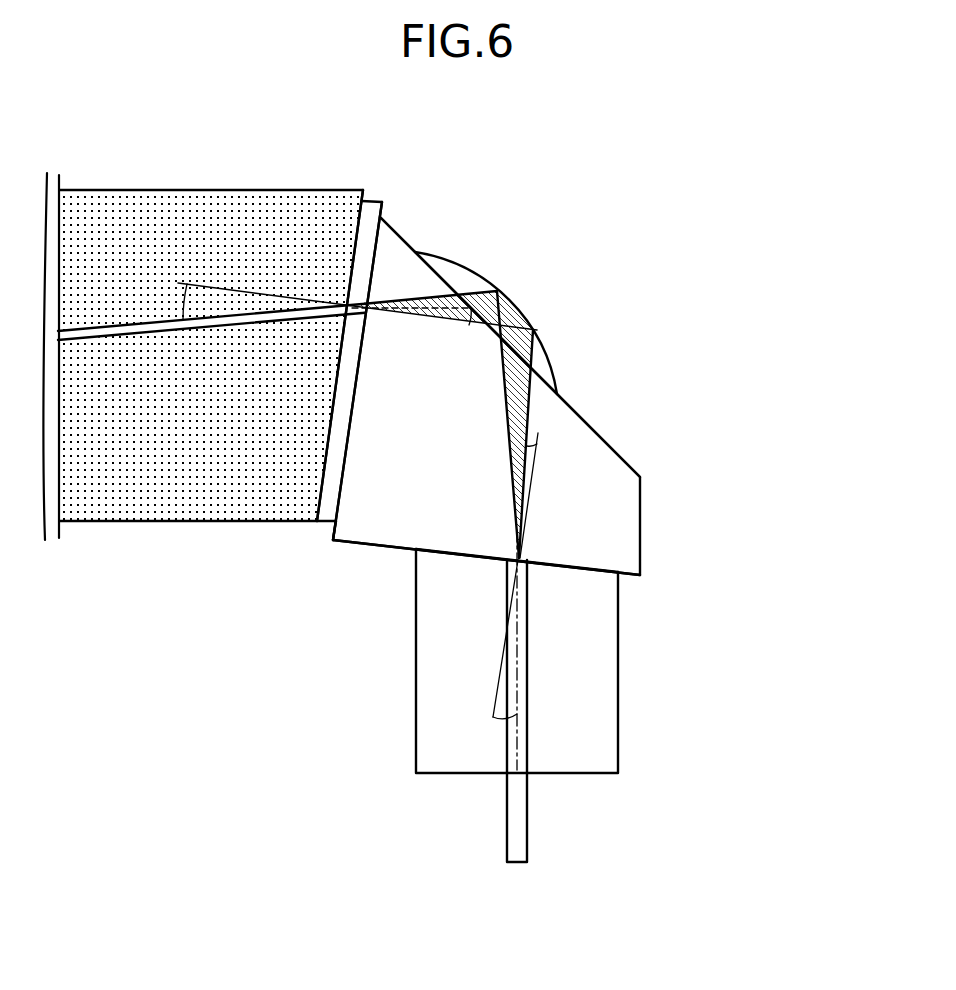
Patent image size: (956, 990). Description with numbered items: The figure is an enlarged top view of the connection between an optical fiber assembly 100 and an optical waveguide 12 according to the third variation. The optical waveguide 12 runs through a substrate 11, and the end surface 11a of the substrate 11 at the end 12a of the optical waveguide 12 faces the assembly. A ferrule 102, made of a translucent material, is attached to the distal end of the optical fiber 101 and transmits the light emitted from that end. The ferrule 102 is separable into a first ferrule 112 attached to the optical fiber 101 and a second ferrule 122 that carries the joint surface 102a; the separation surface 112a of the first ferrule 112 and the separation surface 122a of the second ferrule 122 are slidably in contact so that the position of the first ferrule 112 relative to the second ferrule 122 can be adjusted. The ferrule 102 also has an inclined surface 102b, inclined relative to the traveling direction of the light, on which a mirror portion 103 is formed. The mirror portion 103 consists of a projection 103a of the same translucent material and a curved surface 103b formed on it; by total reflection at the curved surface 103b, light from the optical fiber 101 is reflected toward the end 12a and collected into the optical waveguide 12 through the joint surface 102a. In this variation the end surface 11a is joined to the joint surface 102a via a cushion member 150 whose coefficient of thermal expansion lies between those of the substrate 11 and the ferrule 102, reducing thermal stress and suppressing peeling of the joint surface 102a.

The substrate 11 is at (275, 210).
The end surface of the substrate 11a is at (372, 208).
The optical waveguide 12 is at (117, 333).
The end of the optical waveguide 12a is at (365, 308).
The optical fiber assembly 100 is at (516, 524).
The optical fiber 101 is at (520, 815).
The ferrule 102 is at (525, 479).
The joint surface 102a is at (331, 530).
The inclined surface 102b is at (386, 224).
The mirror portion 103 is at (576, 405).
The projection 103a is at (547, 370).
The curved surface 103b is at (547, 343).
The first ferrule 112 is at (600, 607).
The separation surface of the first ferrule 112a is at (582, 563).
The second ferrule 122 is at (622, 555).
The separation surface of the second ferrule 122a is at (377, 547).
The cushion member 150 is at (373, 203).